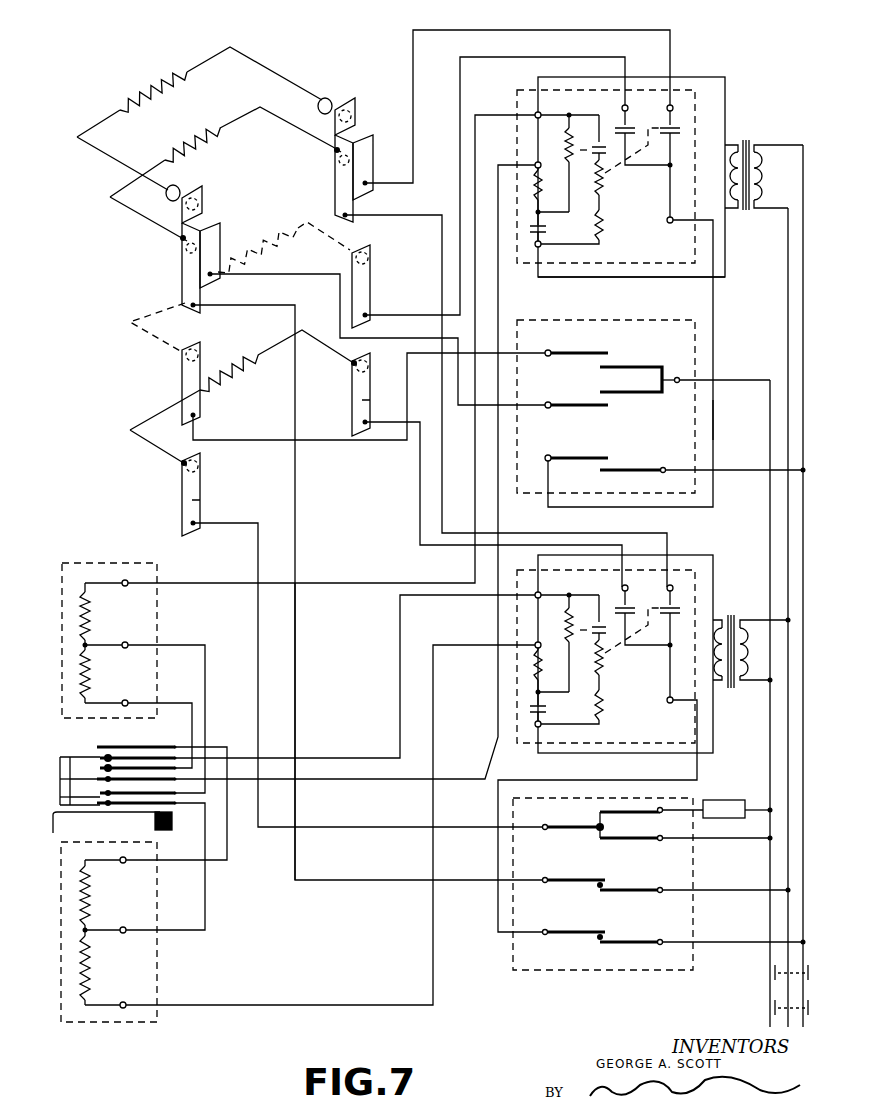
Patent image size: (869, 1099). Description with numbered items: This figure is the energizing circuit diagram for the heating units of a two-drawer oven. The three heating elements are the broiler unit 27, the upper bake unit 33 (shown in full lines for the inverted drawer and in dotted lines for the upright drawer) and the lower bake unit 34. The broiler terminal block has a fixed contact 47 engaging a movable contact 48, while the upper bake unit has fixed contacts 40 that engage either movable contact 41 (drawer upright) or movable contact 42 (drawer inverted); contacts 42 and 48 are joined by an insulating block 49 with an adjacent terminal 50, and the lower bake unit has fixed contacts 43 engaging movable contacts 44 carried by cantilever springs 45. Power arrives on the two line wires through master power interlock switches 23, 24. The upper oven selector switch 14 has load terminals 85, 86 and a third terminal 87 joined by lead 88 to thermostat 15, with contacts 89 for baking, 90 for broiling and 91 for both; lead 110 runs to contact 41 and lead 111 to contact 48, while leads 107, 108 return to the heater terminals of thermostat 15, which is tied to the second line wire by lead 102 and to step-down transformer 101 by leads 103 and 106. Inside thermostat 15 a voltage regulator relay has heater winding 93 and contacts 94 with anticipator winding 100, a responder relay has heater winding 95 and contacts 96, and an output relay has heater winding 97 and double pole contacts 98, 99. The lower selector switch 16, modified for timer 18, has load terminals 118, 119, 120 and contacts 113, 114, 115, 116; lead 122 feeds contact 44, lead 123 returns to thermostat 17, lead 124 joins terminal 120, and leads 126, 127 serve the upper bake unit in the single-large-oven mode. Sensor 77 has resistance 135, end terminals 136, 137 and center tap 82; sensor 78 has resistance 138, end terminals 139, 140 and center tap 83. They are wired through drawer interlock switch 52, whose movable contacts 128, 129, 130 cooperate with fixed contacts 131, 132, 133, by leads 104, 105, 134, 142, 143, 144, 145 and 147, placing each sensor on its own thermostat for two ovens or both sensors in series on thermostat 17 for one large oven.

The broiler unit 27 is at (168, 78).
The upper bake unit 33 is at (204, 132).
The lower bake unit 34 is at (254, 356).
The fixed contact 47 is at (166, 196).
The movable contact 48 is at (352, 112).
The fixed contact 40 is at (330, 153).
The movable contact 42 is at (338, 165).
The insulating block 49 is at (338, 192).
The terminal 50 is at (355, 204).
The movable contact 41 is at (370, 260).
The fixed contact 43 is at (350, 362).
The movable contact 44 is at (370, 364).
The cantilever spring 45 is at (370, 404).
The lead 107 is at (468, 30).
The lead 108 is at (526, 58).
The lead 110 is at (358, 450).
The lead 111 is at (380, 340).
The lead 122 is at (380, 826).
The lead 123 is at (420, 502).
The lead 126 is at (648, 530).
The lead 104 is at (496, 312).
The lead 105 is at (348, 582).
The lead 147 is at (400, 676).
The lead 127 is at (296, 680).
The lead 145 is at (294, 1010).
The lead 124 is at (498, 910).
The lead 102 is at (714, 344).
The lead 88 is at (714, 428).
The lead 106 is at (685, 75).
The lead 103 is at (648, 280).
The thermostat 15 is at (696, 98).
The heater winding 95 is at (566, 136).
The contacts 96 is at (590, 146).
The heater winding 97 is at (604, 186).
The anticipator winding 100 is at (604, 240).
The heater winding 93 is at (542, 184).
The contacts 94 is at (542, 232).
The contacts 98 is at (630, 128).
The contacts 99 is at (680, 128).
The step-down transformer 101 is at (750, 146).
The master power interlock switch 23 is at (773, 970).
The master power interlock switch 24 is at (773, 1008).
The oven selector switch 14 is at (672, 318).
The load terminal 85 is at (546, 353).
The load terminal 86 is at (546, 405).
The third terminal 87 is at (546, 458).
The switch contacts 89 is at (614, 356).
The switch contacts 90 is at (614, 405).
The switch contacts 91 is at (614, 459).
The thermostat 17 is at (672, 562).
The oven selector switch 16 is at (688, 798).
The timer 18 is at (724, 802).
The switch contacts 113 is at (606, 816).
The switch contacts 114 is at (606, 885).
The switch contacts 115 is at (606, 938).
The switch contacts 116 is at (594, 833).
The load terminal 118 is at (542, 832).
The load terminal 119 is at (542, 882).
The load terminal 120 is at (543, 938).
The external sensor 77 is at (70, 563).
The resistance 135 is at (80, 605).
The end terminal 136 is at (122, 580).
The center tap 82 is at (128, 642).
The lead 142 is at (182, 645).
The end terminal 137 is at (125, 700).
The lead 134 is at (192, 706).
The drawer interlock switch 52 is at (60, 768).
The contact 133 is at (110, 756).
The fixed contact 131 is at (140, 765).
The movable contact 128 is at (75, 757).
The movable contact 129 is at (68, 780).
The movable contact 130 is at (68, 800).
The fixed contact 132 is at (142, 818).
The lead 143 is at (230, 852).
The lead 144 is at (210, 906).
The external sensor 78 is at (92, 1022).
The resistance 138 is at (80, 905).
The end terminal 139 is at (123, 864).
The center tap 83 is at (123, 927).
The end terminal 140 is at (123, 1002).